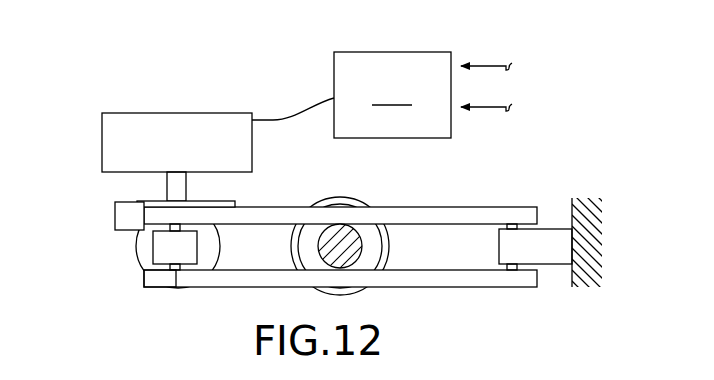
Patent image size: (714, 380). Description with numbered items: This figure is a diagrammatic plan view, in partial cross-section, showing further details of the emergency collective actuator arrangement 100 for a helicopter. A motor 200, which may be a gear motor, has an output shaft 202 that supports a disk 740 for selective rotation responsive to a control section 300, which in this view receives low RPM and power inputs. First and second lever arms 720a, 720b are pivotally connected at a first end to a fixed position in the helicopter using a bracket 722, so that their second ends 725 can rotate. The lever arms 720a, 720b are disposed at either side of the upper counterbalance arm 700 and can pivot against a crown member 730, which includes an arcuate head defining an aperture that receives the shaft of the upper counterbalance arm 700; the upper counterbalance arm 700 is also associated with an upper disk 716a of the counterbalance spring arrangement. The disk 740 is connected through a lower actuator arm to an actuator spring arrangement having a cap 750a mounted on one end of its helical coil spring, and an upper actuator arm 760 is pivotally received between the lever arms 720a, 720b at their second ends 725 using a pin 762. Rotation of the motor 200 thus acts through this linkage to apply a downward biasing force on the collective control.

The emergency collective actuator arrangement 100 is at (122, 104).
The motor 200 is at (252, 147).
The output shaft 202 is at (186, 183).
The control section 300 is at (405, 90).
The upper counterbalance arm 700 is at (361, 236).
The upper disk 716a is at (341, 197).
The first lever arm 720a is at (440, 287).
The second lever arm 720b is at (452, 207).
The bracket 722 is at (552, 229).
The second ends 725 is at (142, 208).
The crown member 730 is at (382, 247).
The disk 740 is at (115, 215).
The cap 750a is at (136, 248).
The upper actuator arm 760 is at (197, 247).
The pin 762 is at (175, 270).